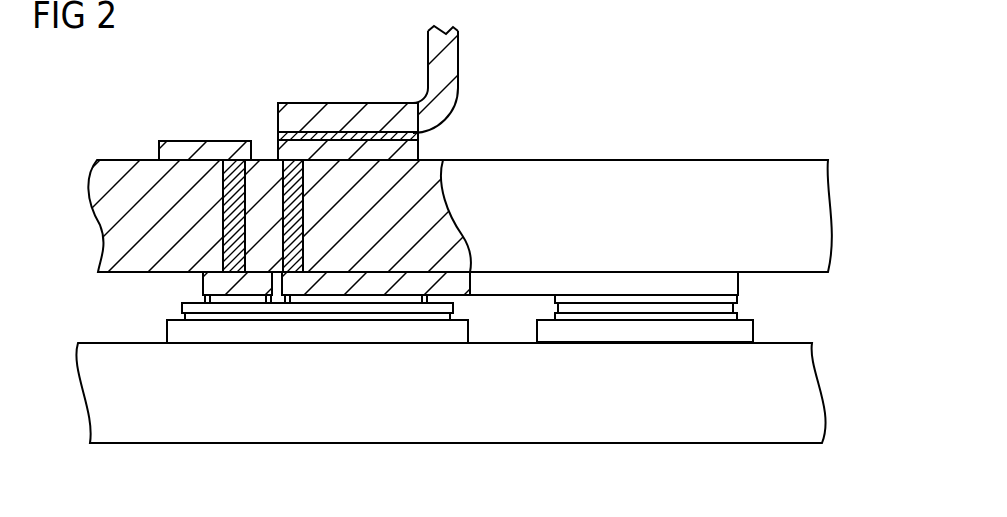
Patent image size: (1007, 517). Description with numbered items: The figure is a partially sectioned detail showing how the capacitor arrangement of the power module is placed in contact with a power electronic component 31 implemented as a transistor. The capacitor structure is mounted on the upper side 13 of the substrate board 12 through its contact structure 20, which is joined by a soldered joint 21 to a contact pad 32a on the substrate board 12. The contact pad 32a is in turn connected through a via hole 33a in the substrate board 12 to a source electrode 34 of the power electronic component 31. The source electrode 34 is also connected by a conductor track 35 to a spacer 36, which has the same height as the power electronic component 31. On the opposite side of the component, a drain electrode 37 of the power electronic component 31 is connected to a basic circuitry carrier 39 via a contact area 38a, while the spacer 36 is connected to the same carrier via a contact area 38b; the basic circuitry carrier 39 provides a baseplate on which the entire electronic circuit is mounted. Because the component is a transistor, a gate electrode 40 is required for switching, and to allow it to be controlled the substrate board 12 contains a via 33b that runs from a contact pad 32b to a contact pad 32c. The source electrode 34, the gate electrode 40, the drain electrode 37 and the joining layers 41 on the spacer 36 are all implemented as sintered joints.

The substrate board 12 is at (653, 175).
The upper side 13 is at (723, 159).
The contact structure 20 is at (337, 108).
The soldered joint 21 is at (385, 138).
The power electronic component 31 is at (427, 308).
The contact pad 32a is at (420, 138).
The contact pad 32b is at (213, 286).
The contact pad 32c is at (197, 136).
The via hole 33a is at (297, 203).
The via 33b is at (233, 187).
The source electrode 34 is at (305, 298).
The conductor track 35 is at (495, 283).
The spacer 36 is at (581, 308).
The drain electrode 37 is at (245, 317).
The contact area 38a is at (358, 332).
The contact area 38b is at (630, 332).
The basic circuitry carrier 39 is at (160, 430).
The gate electrode 40 is at (221, 276).
The joining layers 41 is at (733, 301).